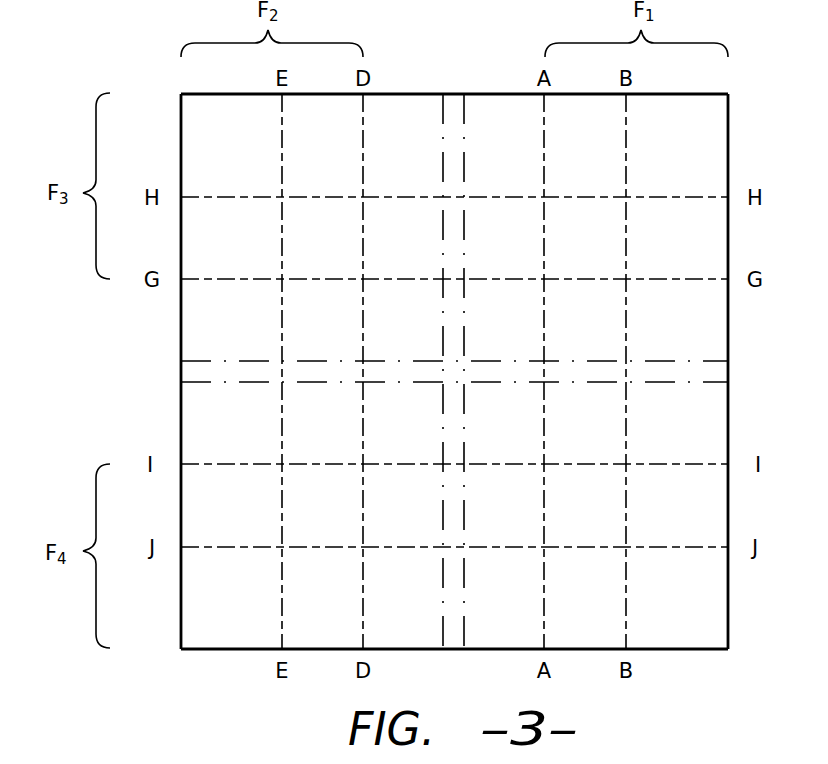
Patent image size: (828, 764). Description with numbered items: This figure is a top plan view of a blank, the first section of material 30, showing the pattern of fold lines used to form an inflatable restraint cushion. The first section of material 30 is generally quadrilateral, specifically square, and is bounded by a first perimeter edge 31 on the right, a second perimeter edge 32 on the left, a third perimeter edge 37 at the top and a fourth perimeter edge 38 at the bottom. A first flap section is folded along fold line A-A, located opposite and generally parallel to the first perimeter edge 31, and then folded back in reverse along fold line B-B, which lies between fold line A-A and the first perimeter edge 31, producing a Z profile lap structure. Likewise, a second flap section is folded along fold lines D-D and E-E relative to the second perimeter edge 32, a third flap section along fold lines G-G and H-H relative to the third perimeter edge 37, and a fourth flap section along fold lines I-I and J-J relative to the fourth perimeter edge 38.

The first section of material 30 is at (145, 86).
The first perimeter edge 31 is at (728, 425).
The second perimeter edge 32 is at (181, 397).
The third perimeter edge 37 is at (404, 94).
The fourth perimeter edge 38 is at (673, 650).